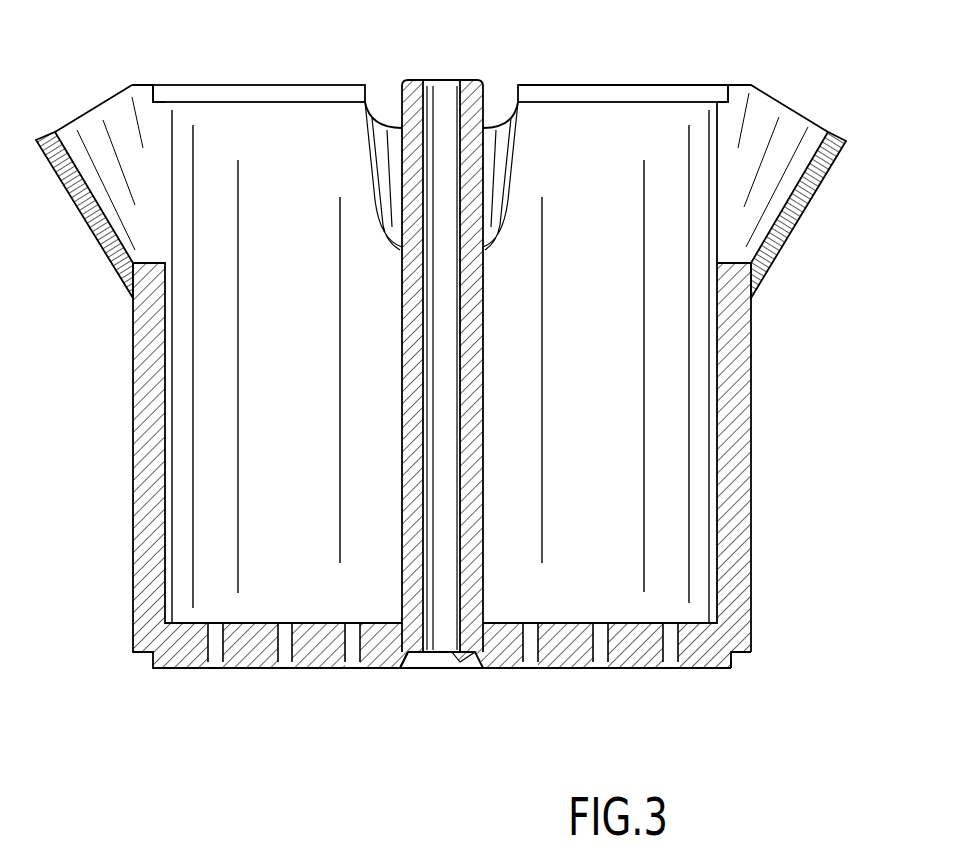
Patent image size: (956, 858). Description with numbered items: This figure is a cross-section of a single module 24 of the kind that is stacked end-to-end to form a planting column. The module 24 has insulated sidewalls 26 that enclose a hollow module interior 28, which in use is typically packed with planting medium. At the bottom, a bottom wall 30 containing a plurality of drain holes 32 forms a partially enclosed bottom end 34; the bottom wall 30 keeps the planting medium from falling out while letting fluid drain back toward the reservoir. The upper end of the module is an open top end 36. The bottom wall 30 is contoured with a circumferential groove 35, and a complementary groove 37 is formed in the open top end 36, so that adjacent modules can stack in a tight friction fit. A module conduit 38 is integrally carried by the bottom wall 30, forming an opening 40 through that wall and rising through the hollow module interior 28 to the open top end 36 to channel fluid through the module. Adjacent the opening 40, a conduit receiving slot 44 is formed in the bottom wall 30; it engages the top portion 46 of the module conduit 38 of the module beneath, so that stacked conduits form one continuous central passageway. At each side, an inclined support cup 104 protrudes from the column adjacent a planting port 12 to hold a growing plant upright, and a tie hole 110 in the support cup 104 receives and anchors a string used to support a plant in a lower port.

The planting port 12 is at (152, 170).
The module 24 is at (751, 425).
The insulated sidewall 26 is at (745, 336).
The hollow module interior 28 is at (682, 525).
The bottom wall 30 is at (639, 670).
The drain holes 32 is at (213, 662).
The partially enclosed bottom end 34 is at (772, 620).
The circumferential groove 35 is at (743, 655).
The open top end 36 is at (698, 78).
The complementary groove 37 is at (620, 92).
The module conduit 38 is at (495, 326).
The opening 40 is at (462, 670).
The conduit receiving slot 44 is at (413, 663).
The top portion 46 is at (492, 78).
The inclined support cup 104 is at (71, 220).
The tie hole 110 is at (838, 160).